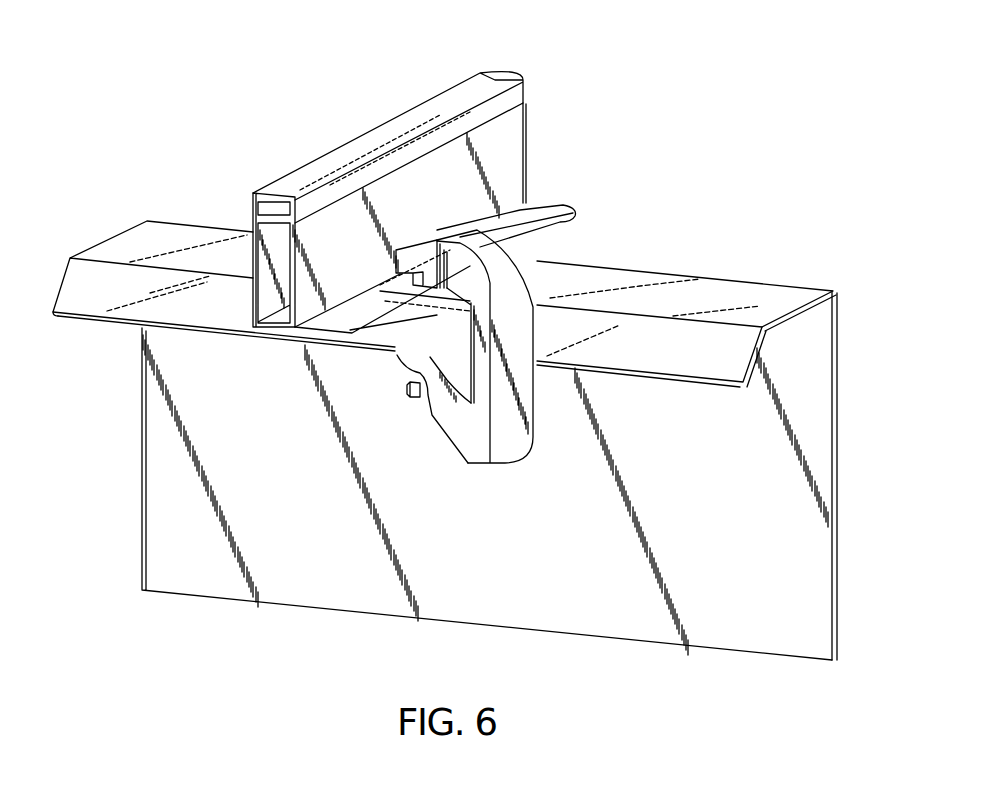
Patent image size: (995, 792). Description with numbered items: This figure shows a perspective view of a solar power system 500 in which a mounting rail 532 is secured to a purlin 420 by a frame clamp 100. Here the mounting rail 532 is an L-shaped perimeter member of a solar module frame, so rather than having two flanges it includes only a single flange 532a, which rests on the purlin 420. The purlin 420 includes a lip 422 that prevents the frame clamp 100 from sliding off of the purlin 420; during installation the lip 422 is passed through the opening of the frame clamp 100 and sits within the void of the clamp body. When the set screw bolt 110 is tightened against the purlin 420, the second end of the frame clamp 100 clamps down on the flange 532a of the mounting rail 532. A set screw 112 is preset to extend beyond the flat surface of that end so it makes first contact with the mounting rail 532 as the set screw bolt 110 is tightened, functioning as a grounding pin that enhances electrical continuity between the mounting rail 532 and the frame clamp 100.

The solar power system 500 is at (463, 45).
The mounting rail 532 is at (378, 125).
The flange 532a is at (567, 210).
The purlin 420 is at (753, 282).
The lip 422 is at (762, 347).
The frame clamp 100 is at (556, 400).
The set screw 112 is at (437, 228).
The set screw bolt 110 is at (420, 403).